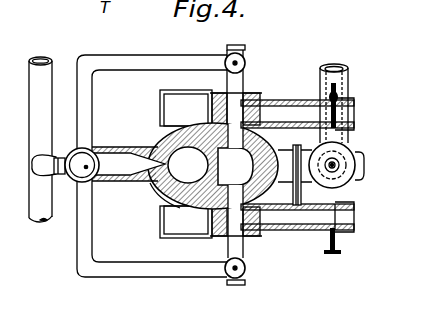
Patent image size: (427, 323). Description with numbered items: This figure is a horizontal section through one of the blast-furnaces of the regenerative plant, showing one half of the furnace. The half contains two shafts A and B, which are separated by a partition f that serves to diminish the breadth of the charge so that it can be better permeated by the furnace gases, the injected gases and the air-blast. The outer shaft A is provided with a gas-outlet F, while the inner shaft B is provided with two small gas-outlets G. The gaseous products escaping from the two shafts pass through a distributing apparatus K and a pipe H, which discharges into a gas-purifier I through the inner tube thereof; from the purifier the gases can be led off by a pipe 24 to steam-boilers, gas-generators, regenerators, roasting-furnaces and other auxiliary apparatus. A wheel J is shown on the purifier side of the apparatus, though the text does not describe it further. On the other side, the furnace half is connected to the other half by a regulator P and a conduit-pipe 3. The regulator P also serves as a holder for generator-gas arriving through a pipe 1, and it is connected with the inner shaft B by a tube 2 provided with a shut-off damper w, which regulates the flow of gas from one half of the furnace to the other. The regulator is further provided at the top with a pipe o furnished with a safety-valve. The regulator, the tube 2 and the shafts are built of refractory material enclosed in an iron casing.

The pipe 24 is at (40, 139).
The pipe H is at (152, 58).
The gas-outlet G is at (230, 130).
The gas-outlet F is at (151, 146).
The partition f is at (163, 198).
The shaft A is at (188, 165).
The shaft B is at (235, 166).
The distributing apparatus K is at (252, 54).
The gas-purifier I is at (72, 182).
The valve wheel J is at (82, 165).
The tube 2 is at (295, 166).
The pipe 1 is at (340, 86).
The conduit-pipe 3 is at (297, 165).
The shut-off damper w is at (360, 214).
The regulator P is at (356, 165).
The pipe o is at (334, 162).